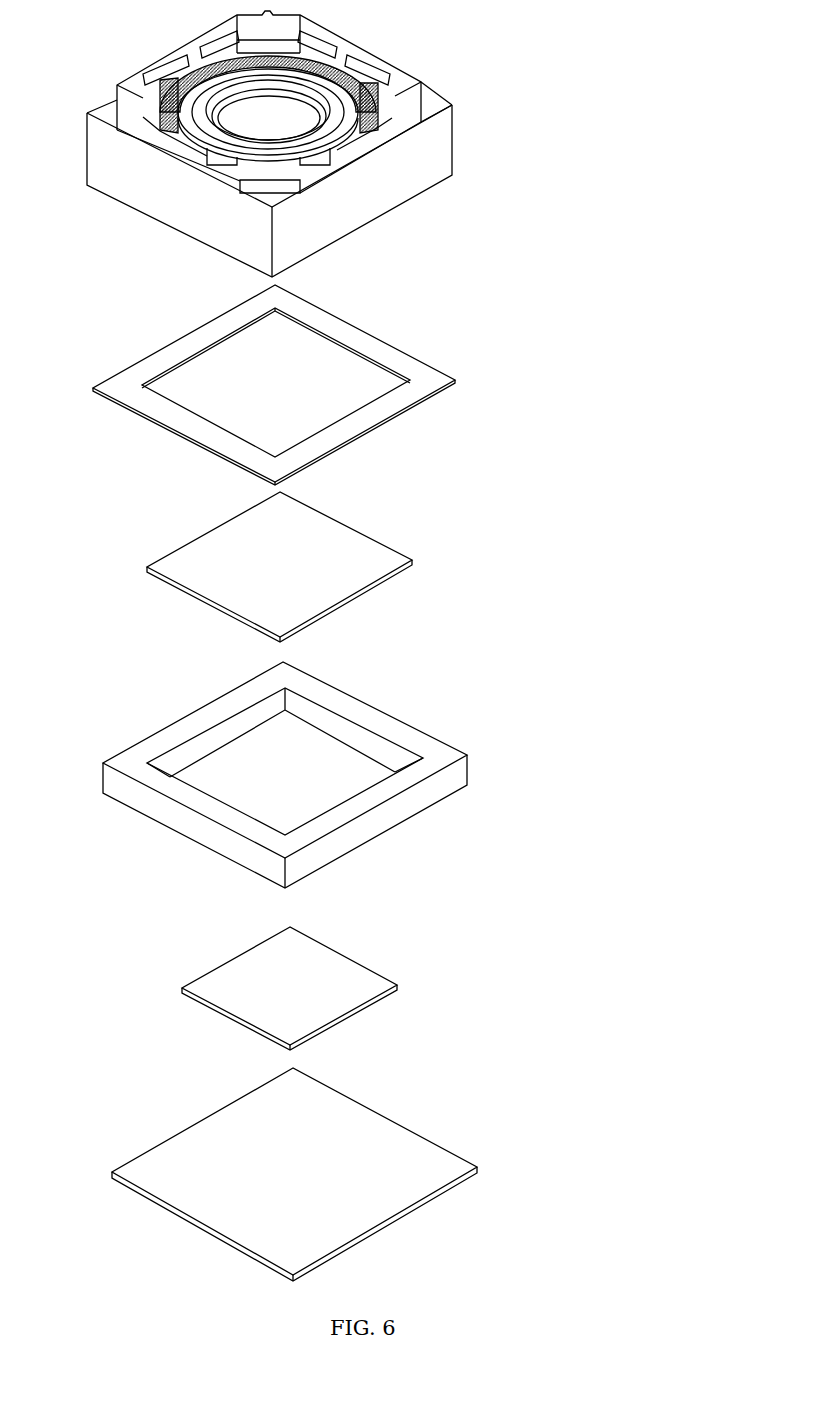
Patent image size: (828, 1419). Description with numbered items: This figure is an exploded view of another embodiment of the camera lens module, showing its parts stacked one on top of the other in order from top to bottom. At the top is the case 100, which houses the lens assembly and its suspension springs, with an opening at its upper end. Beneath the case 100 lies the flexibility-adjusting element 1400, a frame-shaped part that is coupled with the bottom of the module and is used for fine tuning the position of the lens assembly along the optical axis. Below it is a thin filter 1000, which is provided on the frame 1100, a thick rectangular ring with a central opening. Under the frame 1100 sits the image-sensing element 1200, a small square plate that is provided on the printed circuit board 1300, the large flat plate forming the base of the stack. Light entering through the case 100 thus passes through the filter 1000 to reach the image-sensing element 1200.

The case 100 is at (423, 155).
The flexibility-adjusting element 1400 is at (363, 345).
The filter 1000 is at (312, 567).
The frame 1100 is at (405, 728).
The image-sensing element 1200 is at (318, 988).
The printed circuit board 1300 is at (357, 1168).